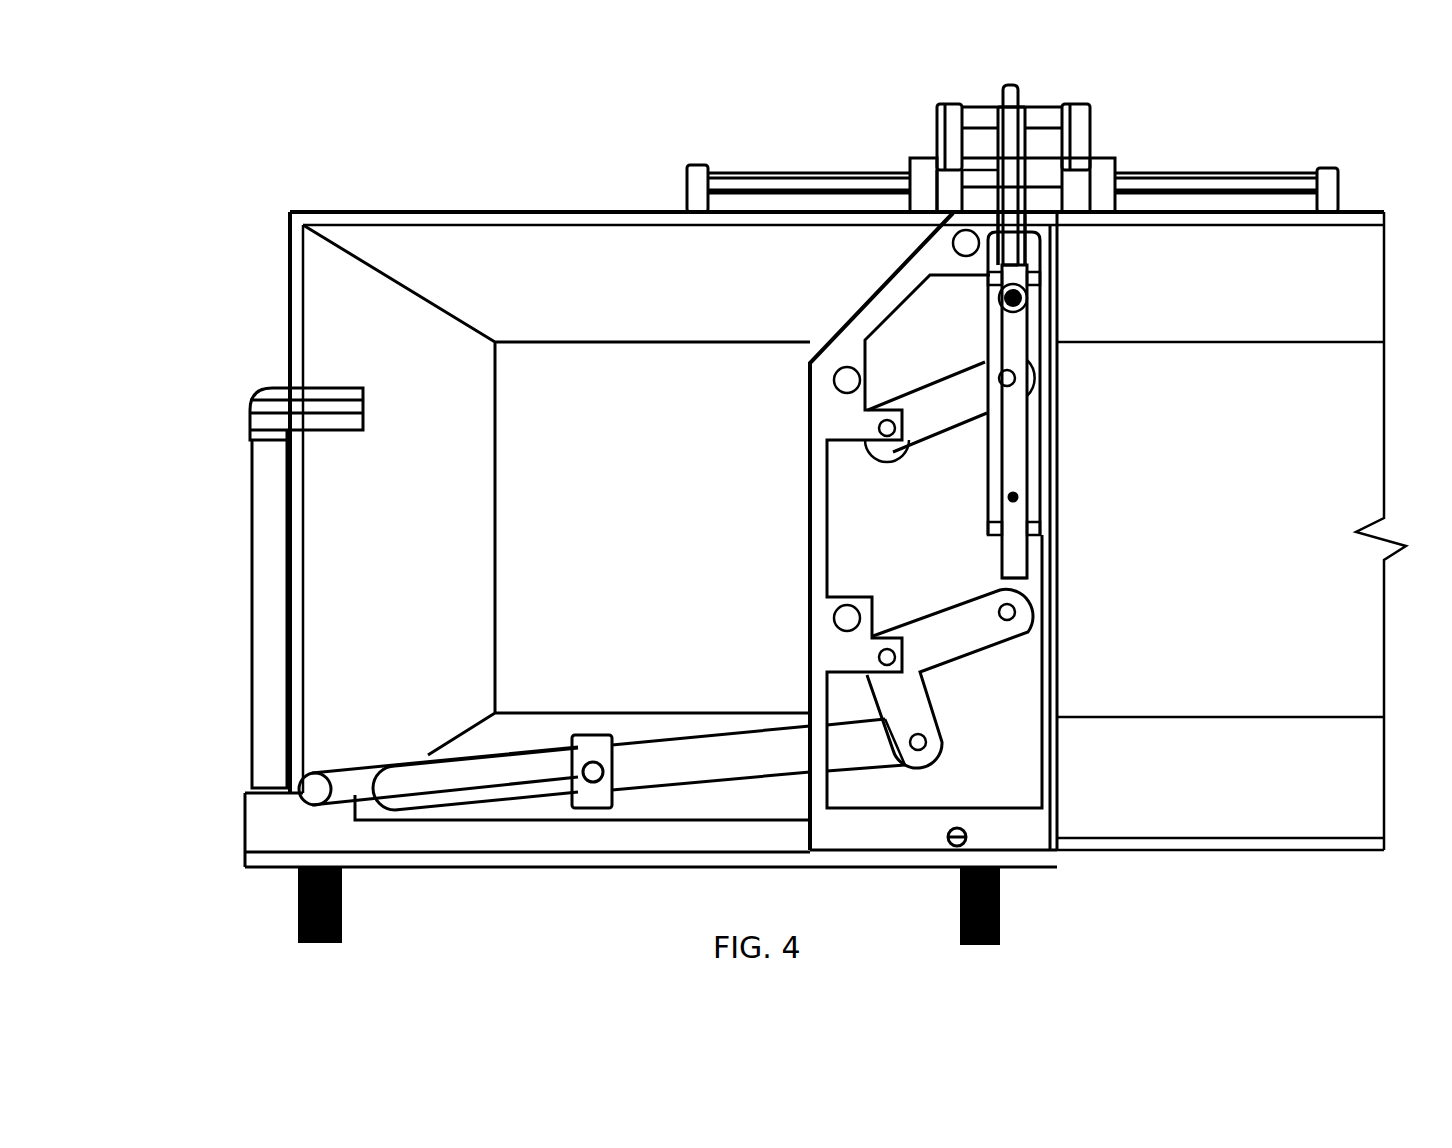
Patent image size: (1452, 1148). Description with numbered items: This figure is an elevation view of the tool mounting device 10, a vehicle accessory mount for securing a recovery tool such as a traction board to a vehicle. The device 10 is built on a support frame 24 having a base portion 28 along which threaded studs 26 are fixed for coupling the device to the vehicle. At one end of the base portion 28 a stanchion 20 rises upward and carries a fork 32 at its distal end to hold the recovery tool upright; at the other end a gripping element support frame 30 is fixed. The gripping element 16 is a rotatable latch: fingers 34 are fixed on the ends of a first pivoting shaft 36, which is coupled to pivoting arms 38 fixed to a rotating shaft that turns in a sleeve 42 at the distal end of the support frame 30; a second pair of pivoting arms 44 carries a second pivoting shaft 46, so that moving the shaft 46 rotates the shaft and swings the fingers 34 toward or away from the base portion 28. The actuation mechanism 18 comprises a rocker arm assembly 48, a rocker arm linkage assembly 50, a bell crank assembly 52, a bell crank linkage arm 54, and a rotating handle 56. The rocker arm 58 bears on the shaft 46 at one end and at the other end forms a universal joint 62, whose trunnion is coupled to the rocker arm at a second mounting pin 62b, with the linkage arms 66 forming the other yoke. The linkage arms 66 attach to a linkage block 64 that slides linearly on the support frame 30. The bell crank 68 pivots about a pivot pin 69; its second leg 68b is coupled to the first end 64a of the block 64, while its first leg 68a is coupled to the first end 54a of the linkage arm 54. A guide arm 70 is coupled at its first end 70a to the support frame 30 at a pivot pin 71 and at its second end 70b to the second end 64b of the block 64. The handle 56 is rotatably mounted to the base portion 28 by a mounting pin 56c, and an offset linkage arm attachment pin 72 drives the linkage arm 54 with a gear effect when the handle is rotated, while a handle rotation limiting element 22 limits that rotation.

The tool mounting device 10 is at (258, 145).
The gripping element 16 is at (828, 120).
The actuation mechanism 18 is at (708, 508).
The stanchion 20 is at (268, 540).
The handle rotation limiting element 22 is at (588, 740).
The support frame 24 is at (265, 827).
The threaded studs 26 is at (340, 912).
The base portion 28 is at (655, 878).
The gripping element support frame 30 is at (825, 395).
The fork 32 is at (330, 418).
The fingers 34 is at (697, 198).
The first pivoting shaft 36 is at (1248, 173).
The pivoting arms 38 is at (924, 180).
The sleeve 42 is at (975, 175).
The second pair of pivoting arms 44 is at (945, 135).
The second pivoting shaft 46 is at (1040, 115).
The rocker arm assembly 48 is at (1068, 252).
The rocker arm linkage assembly 50 is at (1085, 412).
The bell crank assembly 52 is at (998, 735).
The bell crank linkage arm 54 is at (712, 760).
The first end of bell crank linkage arm 54a is at (878, 748).
The rotating handle 56 is at (480, 780).
The mounting pin 56c is at (318, 787).
The rocker arm 58 is at (1010, 202).
The universal joint 62 is at (985, 293).
The second mounting pin 62b is at (1020, 300).
The linkage block 64 is at (1010, 532).
The first end of linkage block 64a is at (1020, 580).
The second end of linkage block 64b is at (1010, 415).
The linkage arms 66 is at (1042, 458).
The bell crank 68 is at (933, 652).
The first leg 68a is at (925, 747).
The second leg 68b is at (975, 607).
The pivot pin 69 is at (887, 648).
The guide arm 70 is at (938, 410).
The first end of guide arm 70a is at (897, 440).
The second end of guide arm 70b is at (1005, 392).
The pivot pin 71 is at (889, 438).
The linkage arm attachment pin 72 is at (392, 776).